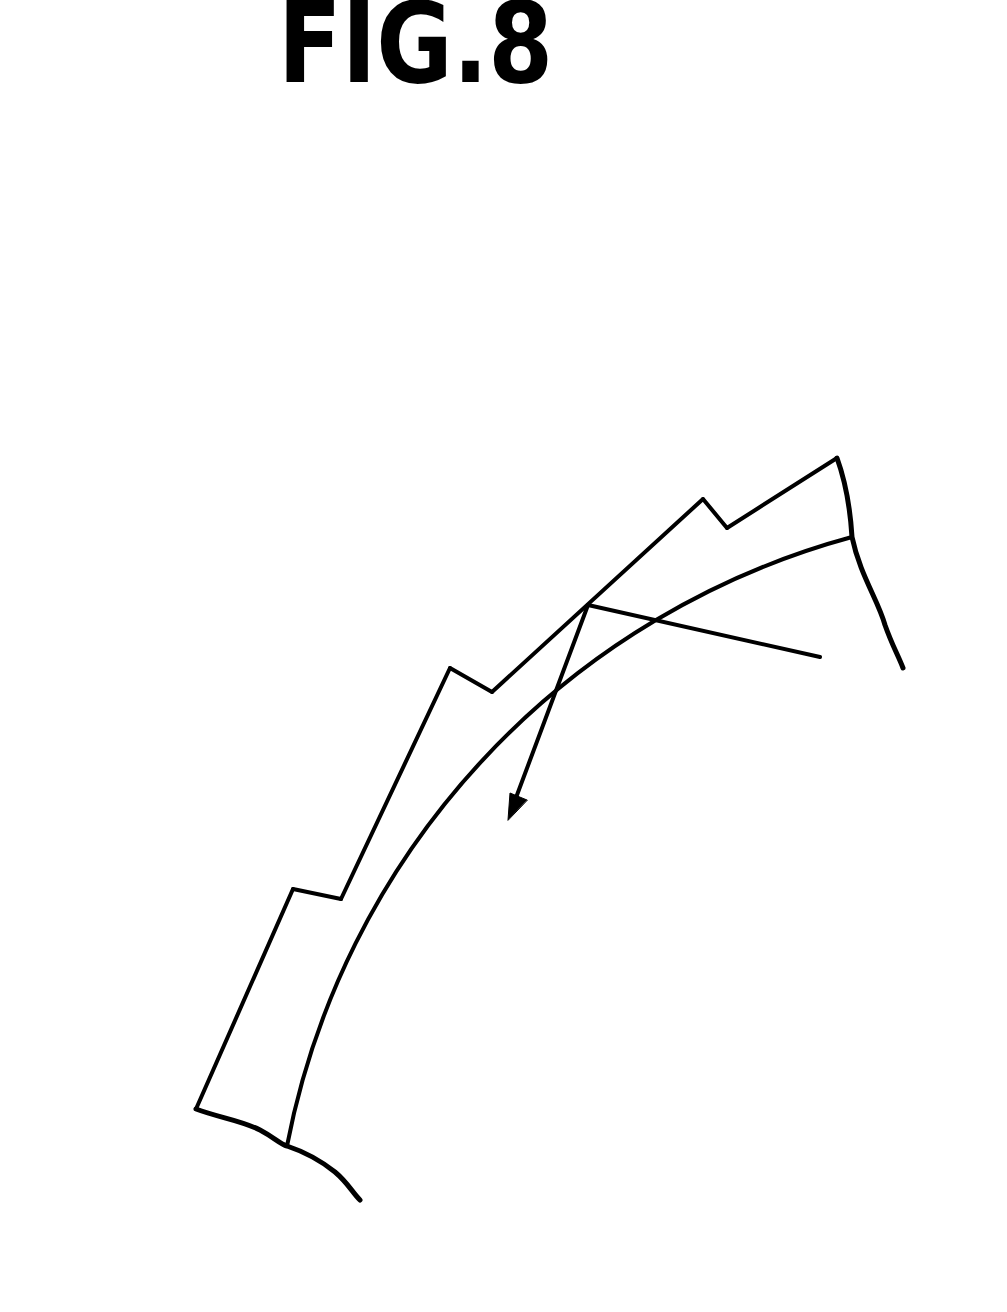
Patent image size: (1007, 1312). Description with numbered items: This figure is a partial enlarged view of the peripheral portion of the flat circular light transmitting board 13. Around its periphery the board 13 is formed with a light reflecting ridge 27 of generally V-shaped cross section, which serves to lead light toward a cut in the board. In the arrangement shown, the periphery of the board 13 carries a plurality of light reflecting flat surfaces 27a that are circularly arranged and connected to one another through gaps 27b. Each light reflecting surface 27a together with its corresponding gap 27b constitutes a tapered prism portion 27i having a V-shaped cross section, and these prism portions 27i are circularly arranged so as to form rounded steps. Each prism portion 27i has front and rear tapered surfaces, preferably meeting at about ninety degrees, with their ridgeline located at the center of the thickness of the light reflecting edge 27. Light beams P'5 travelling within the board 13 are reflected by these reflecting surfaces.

The light reflecting ridge 27 is at (468, 742).
The light reflecting flat surfaces 27a is at (241, 1010).
The gaps 27b is at (318, 883).
The tapered prism portion 27i is at (258, 932).
The circular light transmitting board 13 is at (726, 918).
The light beams P'5 is at (675, 712).